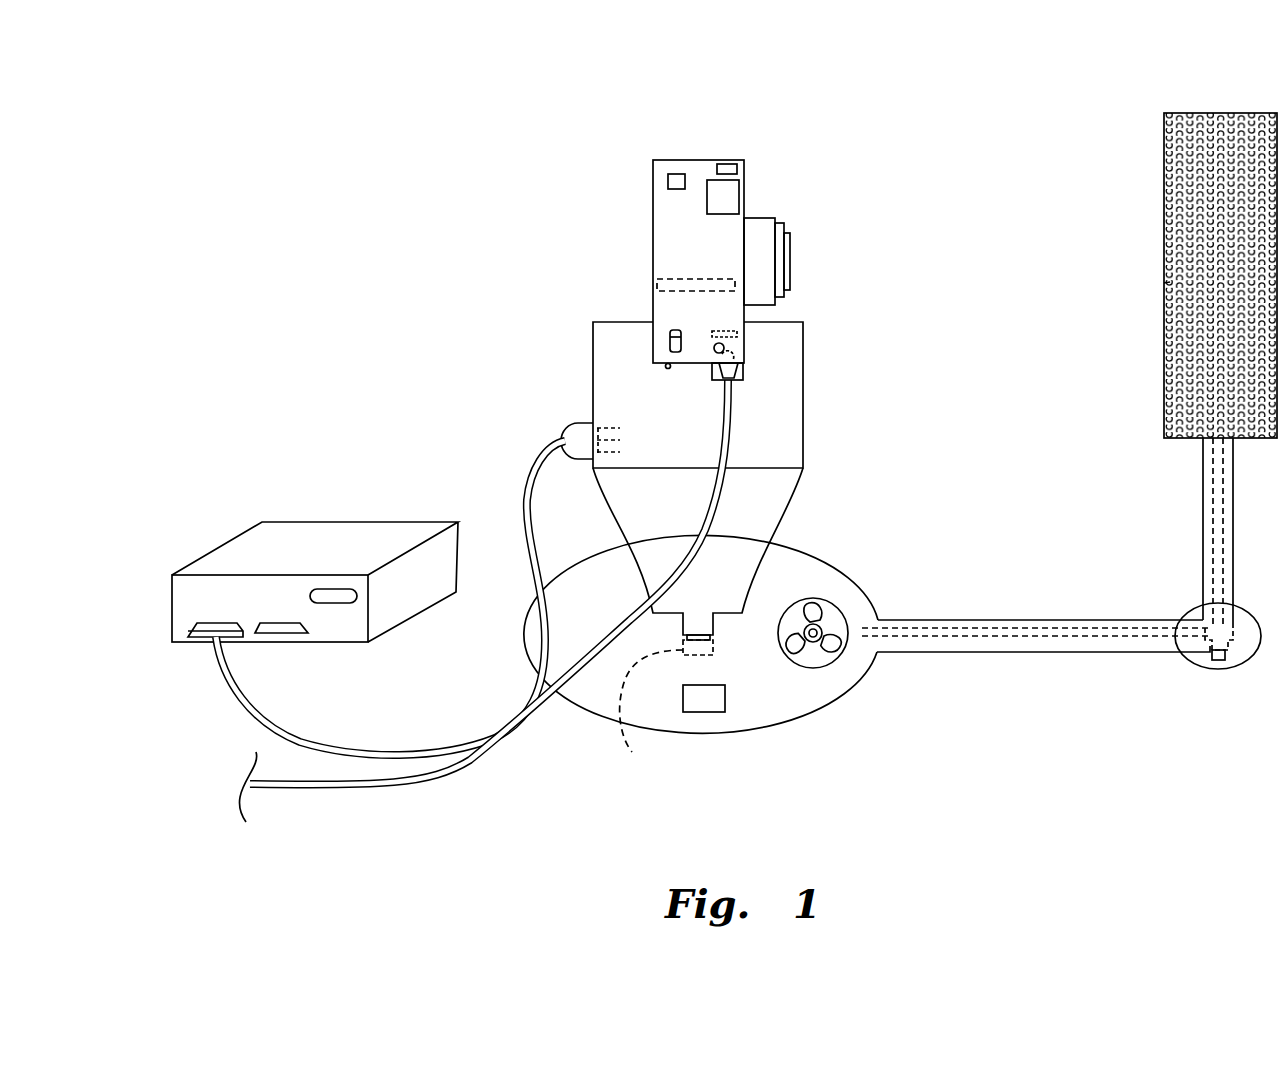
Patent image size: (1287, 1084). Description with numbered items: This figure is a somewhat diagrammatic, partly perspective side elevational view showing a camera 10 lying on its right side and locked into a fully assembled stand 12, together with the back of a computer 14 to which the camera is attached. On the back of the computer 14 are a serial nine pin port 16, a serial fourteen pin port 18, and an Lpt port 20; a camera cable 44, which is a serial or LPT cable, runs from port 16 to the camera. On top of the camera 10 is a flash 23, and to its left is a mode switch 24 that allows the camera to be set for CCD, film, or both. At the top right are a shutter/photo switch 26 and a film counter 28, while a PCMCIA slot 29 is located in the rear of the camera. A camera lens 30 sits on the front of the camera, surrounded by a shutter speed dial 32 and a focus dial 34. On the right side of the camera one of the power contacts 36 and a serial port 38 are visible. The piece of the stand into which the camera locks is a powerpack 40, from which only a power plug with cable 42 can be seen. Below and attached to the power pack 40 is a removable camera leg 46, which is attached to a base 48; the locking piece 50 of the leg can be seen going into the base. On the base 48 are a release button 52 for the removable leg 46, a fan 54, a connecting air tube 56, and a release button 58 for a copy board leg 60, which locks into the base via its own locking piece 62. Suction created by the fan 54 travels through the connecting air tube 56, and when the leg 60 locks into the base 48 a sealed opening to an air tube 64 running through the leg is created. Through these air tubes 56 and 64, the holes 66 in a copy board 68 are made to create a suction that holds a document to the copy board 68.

The camera 10 is at (653, 213).
The stand 12 is at (993, 755).
The computer 14 is at (292, 520).
The RS-232 nine pin port 16 is at (216, 622).
The RS-232 fourteen pin port 18 is at (282, 635).
The Lpt port 20 is at (337, 588).
The flash 23 is at (708, 180).
The mode switch 24 is at (732, 165).
The shutter/photo switch 26 is at (723, 345).
The film counter 28 is at (676, 174).
The PCMCIA slot 29 is at (657, 286).
The camera lens 30 is at (758, 218).
The shutter speed dial 32 is at (778, 224).
The focus dial 34 is at (789, 233).
The power contact 36 is at (666, 366).
The RS-232 port 38 is at (742, 396).
The powerpack 40 is at (804, 345).
The power plug with cable 42 is at (578, 422).
The camera cable 44 is at (372, 748).
The removable camera leg 46 is at (780, 502).
The base 48 is at (918, 620).
The locking piece 50 is at (651, 713).
The release button 52 is at (725, 700).
The fan 54 is at (812, 598).
The connecting air tube 56 is at (942, 636).
The release button 58 is at (1226, 660).
The copy board leg 60 is at (1203, 500).
The locking piece 62 is at (1212, 637).
The air tube 64 is at (1213, 570).
The holes 66 is at (1164, 283).
The copy board 68 is at (1164, 170).